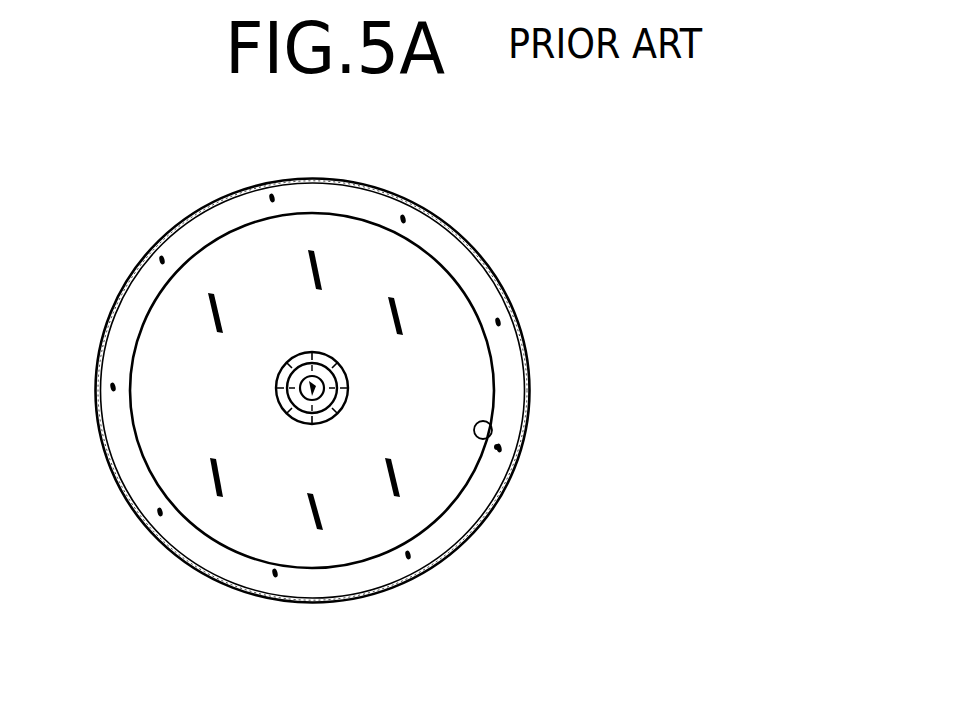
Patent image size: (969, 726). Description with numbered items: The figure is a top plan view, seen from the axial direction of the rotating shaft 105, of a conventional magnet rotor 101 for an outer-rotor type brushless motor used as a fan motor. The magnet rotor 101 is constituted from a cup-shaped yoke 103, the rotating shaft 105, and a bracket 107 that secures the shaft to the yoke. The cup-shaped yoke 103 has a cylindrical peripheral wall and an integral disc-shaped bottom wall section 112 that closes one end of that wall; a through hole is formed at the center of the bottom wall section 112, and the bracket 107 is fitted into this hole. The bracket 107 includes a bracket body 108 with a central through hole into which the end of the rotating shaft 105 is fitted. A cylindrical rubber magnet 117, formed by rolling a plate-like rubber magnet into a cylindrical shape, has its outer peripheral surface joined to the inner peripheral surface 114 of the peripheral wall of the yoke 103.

The magnet rotor 101 is at (495, 258).
The cup-shaped yoke 103 is at (462, 232).
The rotating shaft 105 is at (347, 363).
The bracket 107 is at (362, 405).
The bracket body 108 is at (350, 383).
The bottom wall section 112 is at (402, 477).
The inner peripheral surface 114 is at (497, 447).
The cylindrical rubber magnet 117 is at (122, 324).